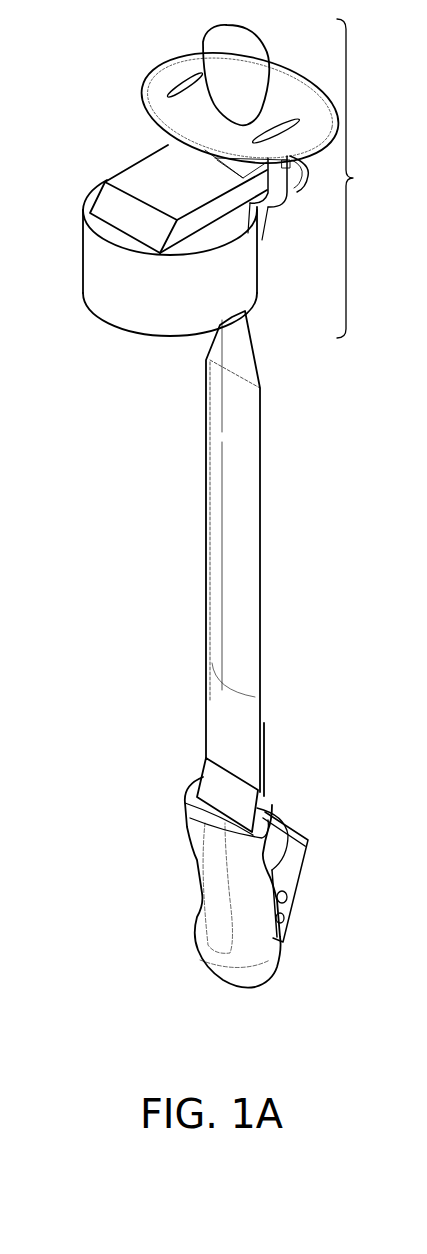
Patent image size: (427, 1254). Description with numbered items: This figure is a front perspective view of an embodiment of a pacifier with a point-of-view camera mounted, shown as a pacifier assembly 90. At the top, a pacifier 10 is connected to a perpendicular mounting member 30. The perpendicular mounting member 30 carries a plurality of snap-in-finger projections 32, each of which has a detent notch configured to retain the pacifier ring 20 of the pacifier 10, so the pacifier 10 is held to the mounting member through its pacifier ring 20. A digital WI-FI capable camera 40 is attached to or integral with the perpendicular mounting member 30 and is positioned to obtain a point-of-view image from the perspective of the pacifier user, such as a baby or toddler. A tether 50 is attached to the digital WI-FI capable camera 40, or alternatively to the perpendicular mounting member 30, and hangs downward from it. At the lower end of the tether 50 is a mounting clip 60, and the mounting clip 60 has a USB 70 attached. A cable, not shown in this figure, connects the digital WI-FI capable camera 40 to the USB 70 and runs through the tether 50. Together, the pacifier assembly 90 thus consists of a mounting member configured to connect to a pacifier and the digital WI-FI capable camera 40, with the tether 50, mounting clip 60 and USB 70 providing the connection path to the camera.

The pacifier 10 is at (141, 97).
The pacifier ring 20 is at (264, 210).
The perpendicular mounting member 30 is at (120, 181).
The snap-in-finger projections 32 is at (297, 189).
The digital WI-FI capable camera 40 is at (100, 271).
The tether 50 is at (252, 515).
The mounting clip 60 is at (210, 893).
The USB 70 is at (292, 882).
The pacifier assembly 90 is at (361, 178).